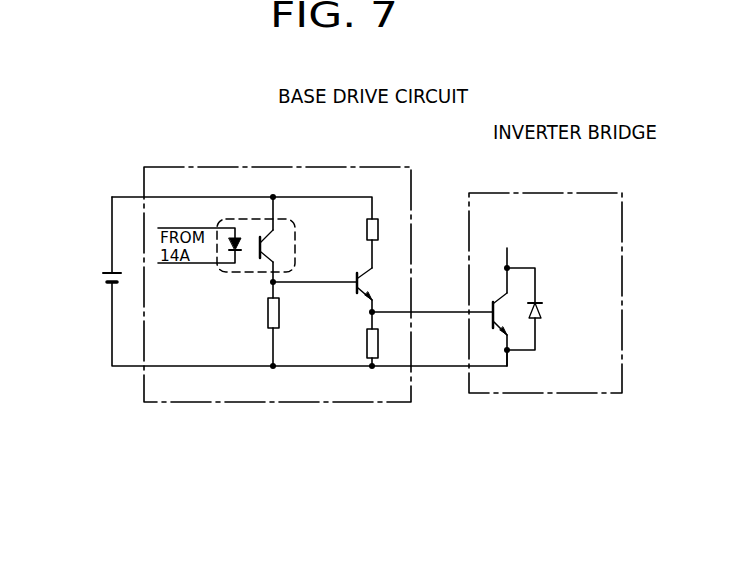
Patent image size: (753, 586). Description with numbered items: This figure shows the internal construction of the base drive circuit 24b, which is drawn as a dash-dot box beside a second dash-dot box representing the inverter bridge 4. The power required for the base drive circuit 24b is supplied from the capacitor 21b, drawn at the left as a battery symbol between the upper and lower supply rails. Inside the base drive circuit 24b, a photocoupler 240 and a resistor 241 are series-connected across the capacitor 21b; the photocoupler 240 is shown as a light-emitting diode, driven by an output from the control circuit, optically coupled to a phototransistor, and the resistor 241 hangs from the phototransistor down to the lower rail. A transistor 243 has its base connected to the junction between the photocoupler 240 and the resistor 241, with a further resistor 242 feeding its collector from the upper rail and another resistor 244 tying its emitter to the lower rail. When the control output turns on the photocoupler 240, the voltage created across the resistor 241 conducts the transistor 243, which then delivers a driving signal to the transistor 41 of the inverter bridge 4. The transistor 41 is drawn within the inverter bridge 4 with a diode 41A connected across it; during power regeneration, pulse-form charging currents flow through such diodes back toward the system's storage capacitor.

The base drive circuit 24b is at (325, 167).
The inverter bridge 4 is at (560, 193).
The capacitor 21b is at (108, 272).
The photocoupler 240 is at (240, 273).
The resistor 241 is at (279, 315).
The resistor 242 is at (367, 230).
The transistor 243 is at (378, 277).
The resistor 244 is at (378, 346).
The transistor 41 is at (491, 299).
The diode 41A is at (542, 309).